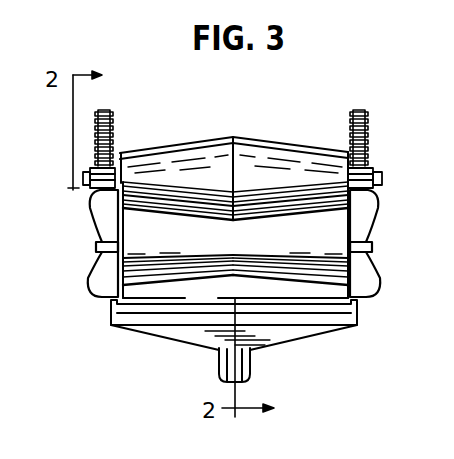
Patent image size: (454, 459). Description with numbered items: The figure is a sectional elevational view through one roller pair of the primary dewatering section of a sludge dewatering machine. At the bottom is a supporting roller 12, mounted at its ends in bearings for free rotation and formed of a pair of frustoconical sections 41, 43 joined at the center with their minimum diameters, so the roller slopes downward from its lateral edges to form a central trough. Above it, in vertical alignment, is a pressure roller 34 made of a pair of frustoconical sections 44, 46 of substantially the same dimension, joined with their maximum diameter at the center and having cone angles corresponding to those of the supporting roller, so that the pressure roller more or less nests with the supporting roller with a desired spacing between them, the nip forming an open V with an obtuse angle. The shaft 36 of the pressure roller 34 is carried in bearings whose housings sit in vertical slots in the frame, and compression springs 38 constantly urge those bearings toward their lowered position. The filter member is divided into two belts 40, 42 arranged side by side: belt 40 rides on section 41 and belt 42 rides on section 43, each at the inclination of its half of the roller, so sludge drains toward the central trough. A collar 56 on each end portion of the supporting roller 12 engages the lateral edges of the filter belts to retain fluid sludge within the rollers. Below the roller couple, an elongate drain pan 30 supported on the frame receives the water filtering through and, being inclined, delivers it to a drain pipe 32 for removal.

The supporting roller 12 is at (170, 284).
The drain pan 30 is at (300, 305).
The drain pipe 32 is at (230, 379).
The pressure roller 34 is at (256, 153).
The shaft 36 is at (92, 176).
The compression spring 38 is at (115, 128).
The belt 40 is at (171, 217).
The frustoconical section 41 is at (211, 256).
The belt 42 is at (292, 215).
The frustoconical section 43 is at (278, 256).
The frustoconical section 44 is at (217, 183).
The frustoconical section 46 is at (290, 183).
The collar 56 is at (101, 287).